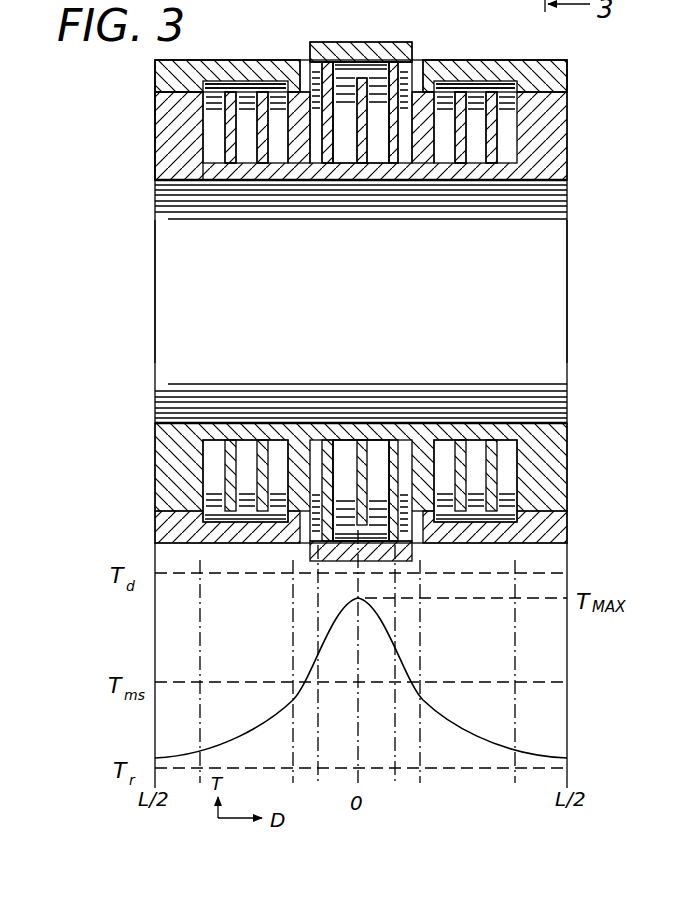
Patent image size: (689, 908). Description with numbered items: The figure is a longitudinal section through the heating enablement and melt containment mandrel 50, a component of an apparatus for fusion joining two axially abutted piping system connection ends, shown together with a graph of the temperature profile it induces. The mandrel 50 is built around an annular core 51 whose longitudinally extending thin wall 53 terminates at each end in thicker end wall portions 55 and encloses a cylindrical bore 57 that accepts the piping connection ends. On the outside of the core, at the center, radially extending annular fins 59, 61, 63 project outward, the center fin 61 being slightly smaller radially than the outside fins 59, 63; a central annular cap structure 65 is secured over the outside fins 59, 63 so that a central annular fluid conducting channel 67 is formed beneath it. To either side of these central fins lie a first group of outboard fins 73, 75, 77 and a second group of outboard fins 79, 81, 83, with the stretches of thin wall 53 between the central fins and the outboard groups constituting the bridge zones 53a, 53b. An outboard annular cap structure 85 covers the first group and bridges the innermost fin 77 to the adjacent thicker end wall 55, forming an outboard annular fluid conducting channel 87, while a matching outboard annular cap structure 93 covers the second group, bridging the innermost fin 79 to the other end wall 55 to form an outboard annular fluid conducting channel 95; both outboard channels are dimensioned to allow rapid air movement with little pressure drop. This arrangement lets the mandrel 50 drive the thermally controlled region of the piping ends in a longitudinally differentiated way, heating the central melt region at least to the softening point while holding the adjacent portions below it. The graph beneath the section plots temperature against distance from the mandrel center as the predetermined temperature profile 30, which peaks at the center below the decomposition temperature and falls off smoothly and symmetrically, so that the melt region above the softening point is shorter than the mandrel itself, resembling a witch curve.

The temperature profile curve 30 is at (410, 656).
The heating enablement and melt containment mandrel 50 is at (104, 190).
The annular core 51 is at (161, 264).
The thin wall 53 is at (290, 389).
The bridge zone 53a is at (362, 389).
The bridge zone 53b is at (413, 438).
The thicker end wall portion 55 is at (163, 118).
The cylindrical bore 57 is at (557, 333).
The centrally located annular fin 59 is at (330, 163).
The center fin 61 is at (362, 163).
The centrally located annular fin 63 is at (393, 163).
The central annular cap structure 65 is at (380, 42).
The central annular fluid conducting channel 67 is at (338, 74).
The outboard annular fin 73 is at (228, 163).
The outboard annular fin 75 is at (263, 163).
The innermost outboard fin 77 is at (295, 163).
The innermost outboard fin 79 is at (430, 163).
The outboard annular fin 81 is at (460, 163).
The outboard annular fin 83 is at (495, 163).
The outboard annular cap structure 85 is at (207, 70).
The outboard annular fluid conducting channel 87 is at (244, 97).
The outboard annular cap structure 93 is at (512, 66).
The outboard annular fluid conducting channel 95 is at (476, 92).